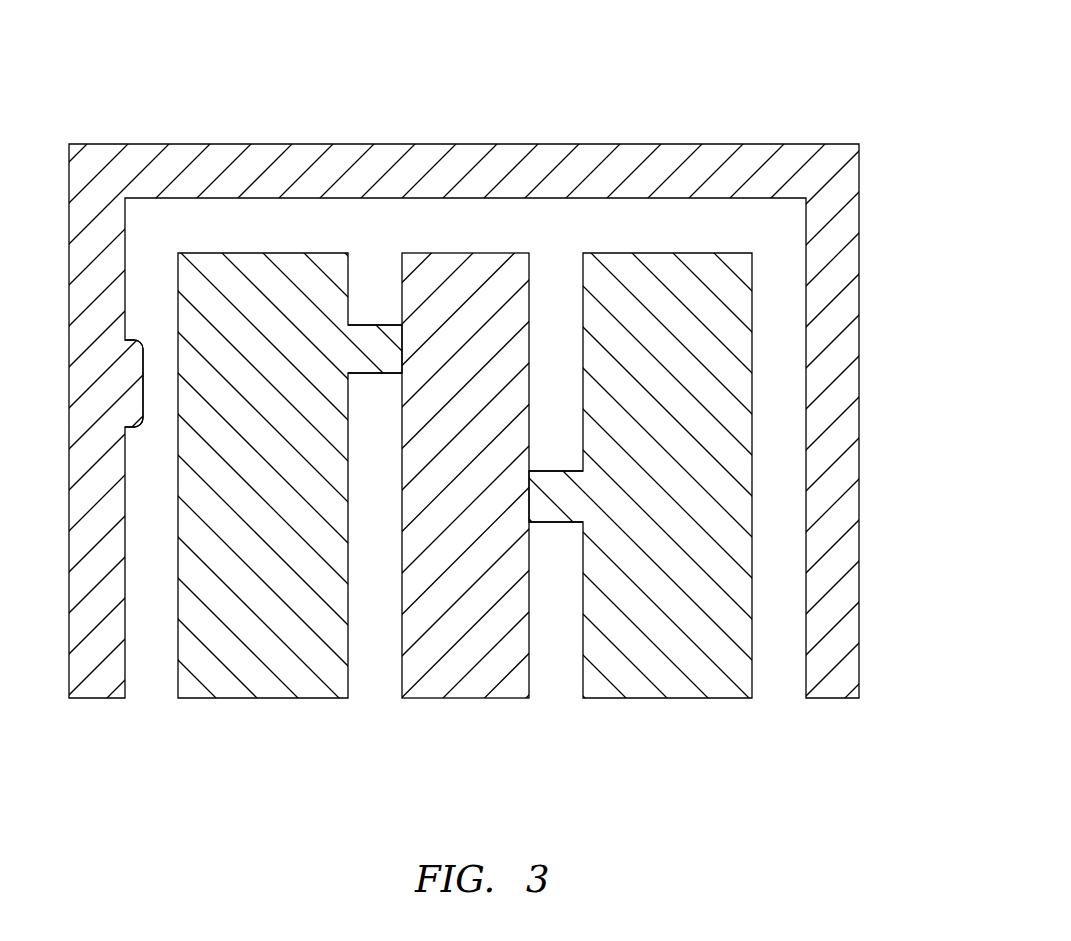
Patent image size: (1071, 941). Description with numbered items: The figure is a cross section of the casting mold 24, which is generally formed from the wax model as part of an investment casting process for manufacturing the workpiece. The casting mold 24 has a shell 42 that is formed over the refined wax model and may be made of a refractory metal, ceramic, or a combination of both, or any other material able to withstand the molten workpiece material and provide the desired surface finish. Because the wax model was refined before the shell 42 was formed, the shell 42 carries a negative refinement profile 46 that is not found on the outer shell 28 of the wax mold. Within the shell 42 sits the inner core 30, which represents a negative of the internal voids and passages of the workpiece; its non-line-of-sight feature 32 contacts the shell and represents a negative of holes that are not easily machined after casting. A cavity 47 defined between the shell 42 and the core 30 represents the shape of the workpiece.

The casting mold 24 is at (778, 80).
The outer shell 28 is at (442, 677).
The inner core 30 is at (275, 505).
The non-line-of-sight feature 32 is at (377, 352).
The shell 42 is at (838, 311).
The refinement profile 46 is at (143, 365).
The cavity 47 is at (275, 240).